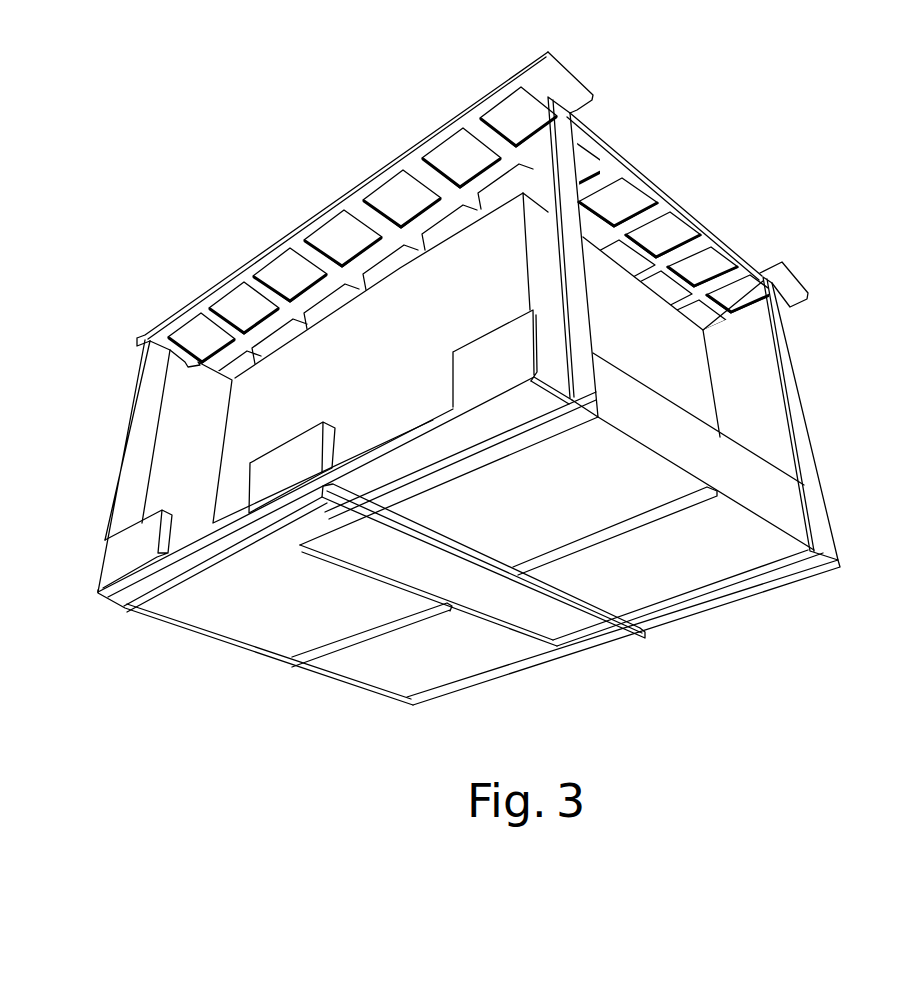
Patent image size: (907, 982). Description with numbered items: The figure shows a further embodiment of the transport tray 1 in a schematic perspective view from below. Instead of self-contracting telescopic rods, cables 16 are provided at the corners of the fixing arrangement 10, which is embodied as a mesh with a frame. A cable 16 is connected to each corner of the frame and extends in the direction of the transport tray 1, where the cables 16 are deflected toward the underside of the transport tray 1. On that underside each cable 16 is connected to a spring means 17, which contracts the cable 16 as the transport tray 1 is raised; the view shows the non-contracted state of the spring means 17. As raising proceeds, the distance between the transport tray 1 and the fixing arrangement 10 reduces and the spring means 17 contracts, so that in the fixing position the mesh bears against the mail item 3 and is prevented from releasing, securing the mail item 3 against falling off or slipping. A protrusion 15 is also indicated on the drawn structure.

The transport tray 1 is at (501, 388).
The mail item 3 is at (693, 390).
The fixing arrangement 10 is at (683, 210).
The protrusion 15 is at (547, 77).
The cable 16 is at (570, 163).
The spring means 17 is at (663, 513).